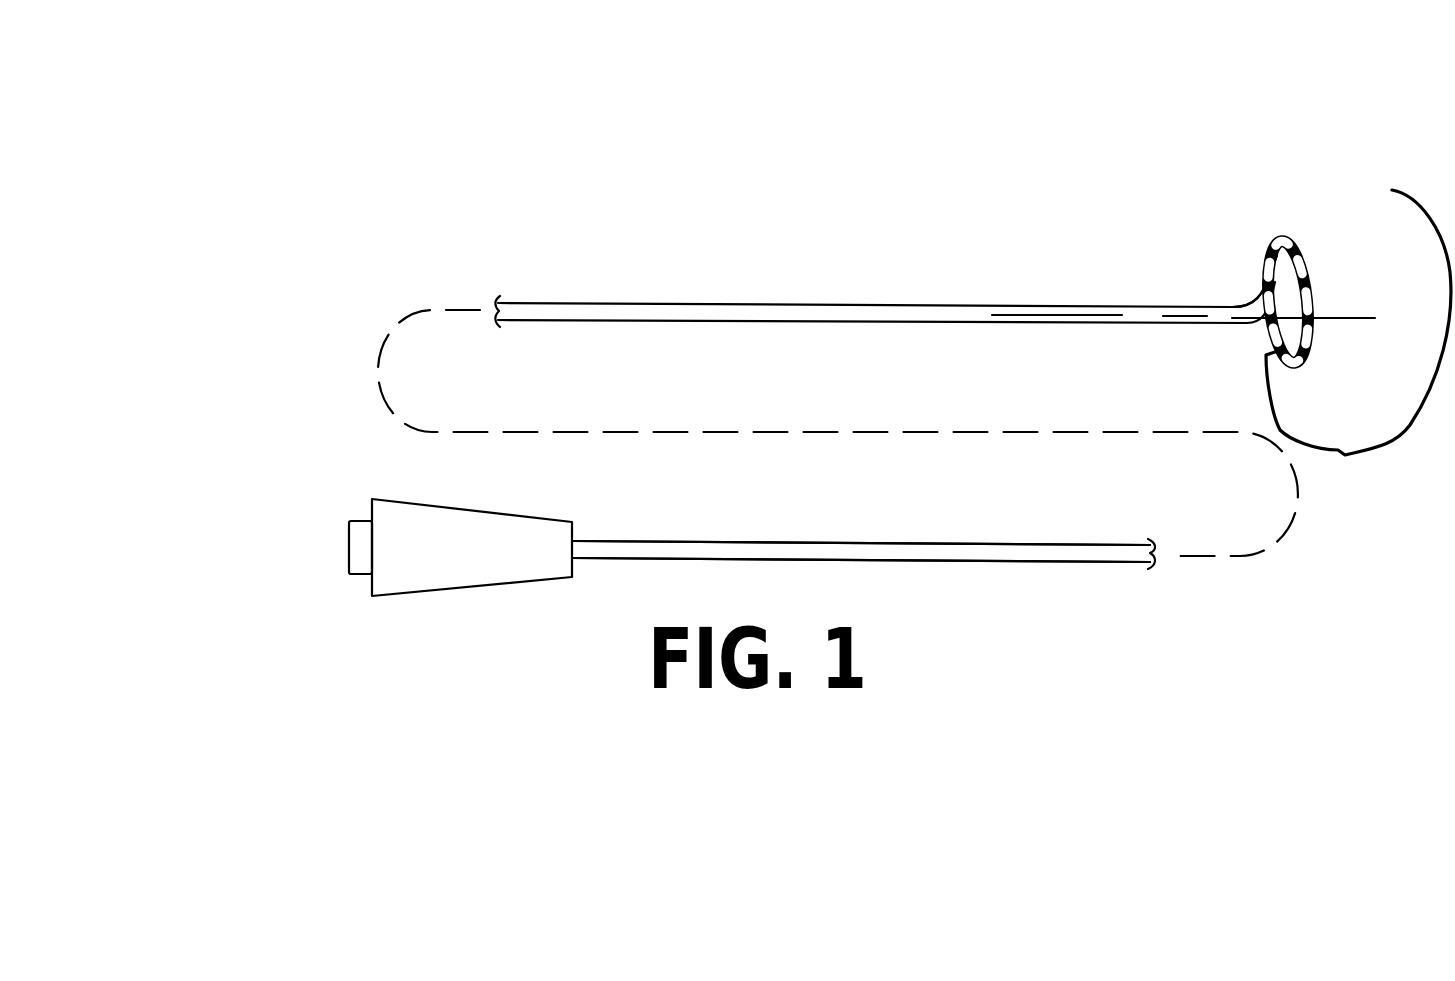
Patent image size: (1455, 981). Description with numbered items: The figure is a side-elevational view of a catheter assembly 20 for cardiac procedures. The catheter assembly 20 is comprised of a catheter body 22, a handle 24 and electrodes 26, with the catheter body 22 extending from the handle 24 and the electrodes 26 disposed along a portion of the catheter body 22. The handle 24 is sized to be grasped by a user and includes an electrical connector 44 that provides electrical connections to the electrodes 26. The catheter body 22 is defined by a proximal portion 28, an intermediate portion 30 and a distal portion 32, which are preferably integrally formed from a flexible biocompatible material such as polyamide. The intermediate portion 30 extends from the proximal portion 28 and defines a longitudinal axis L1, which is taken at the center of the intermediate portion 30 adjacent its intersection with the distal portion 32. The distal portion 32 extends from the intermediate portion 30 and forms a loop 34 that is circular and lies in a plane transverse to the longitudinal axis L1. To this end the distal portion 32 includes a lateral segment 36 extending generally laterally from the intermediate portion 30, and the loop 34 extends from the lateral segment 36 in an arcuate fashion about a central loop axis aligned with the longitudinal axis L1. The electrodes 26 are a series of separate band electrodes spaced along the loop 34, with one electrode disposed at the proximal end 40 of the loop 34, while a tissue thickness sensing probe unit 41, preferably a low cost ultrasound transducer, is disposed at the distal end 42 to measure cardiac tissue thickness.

The catheter assembly 20 is at (652, 139).
The catheter body 22 is at (936, 566).
The handle 24 is at (495, 588).
The electrodes 26 is at (1317, 307).
The proximal portion 28 is at (772, 540).
The intermediate portion 30 is at (770, 322).
The distal portion 32 is at (1284, 378).
The loop 34 is at (1313, 330).
The lateral segment 36 is at (1258, 292).
The proximal end 40 is at (1263, 248).
The tissue thickness sensing probe unit 41 is at (1358, 310).
The distal end 42 is at (1266, 319).
The electrical connector 44 is at (349, 548).
The longitudinal axis L1 is at (1105, 308).